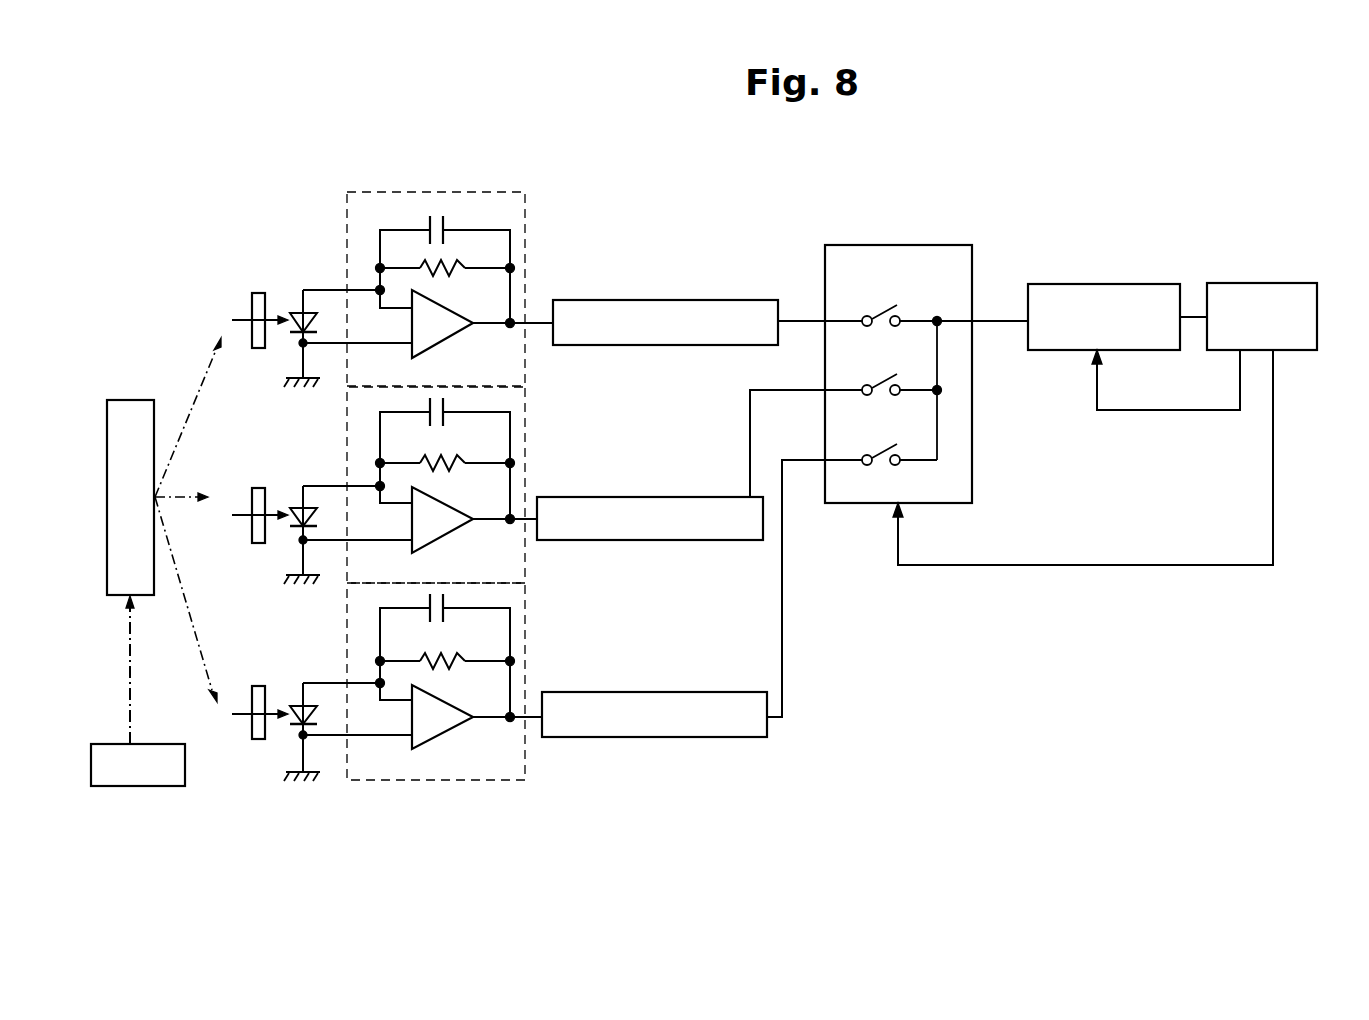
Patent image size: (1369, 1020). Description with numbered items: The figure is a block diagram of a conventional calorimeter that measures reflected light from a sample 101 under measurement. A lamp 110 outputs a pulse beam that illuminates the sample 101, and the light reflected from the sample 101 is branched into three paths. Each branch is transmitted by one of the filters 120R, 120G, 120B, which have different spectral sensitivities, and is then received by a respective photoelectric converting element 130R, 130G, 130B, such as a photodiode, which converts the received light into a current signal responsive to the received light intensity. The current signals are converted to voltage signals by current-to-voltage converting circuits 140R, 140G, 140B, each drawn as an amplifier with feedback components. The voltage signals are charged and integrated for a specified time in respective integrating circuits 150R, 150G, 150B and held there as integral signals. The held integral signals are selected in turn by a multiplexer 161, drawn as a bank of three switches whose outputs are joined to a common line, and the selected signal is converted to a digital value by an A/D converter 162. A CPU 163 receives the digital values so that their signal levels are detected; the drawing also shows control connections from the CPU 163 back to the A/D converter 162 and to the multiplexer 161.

The sample under measurement 101 is at (127, 400).
The lamp 110 is at (150, 744).
The filter 120R is at (255, 293).
The filter 120G is at (255, 488).
The filter 120B is at (255, 740).
The photoelectric converting element 130R is at (303, 311).
The photoelectric converting element 130G is at (301, 506).
The photoelectric converting element 130B is at (300, 704).
The current-to-voltage converting circuit 140R is at (525, 192).
The current-to-voltage converting circuit 140G is at (525, 408).
The current-to-voltage converting circuit 140B is at (525, 770).
The integrating circuit 150R is at (665, 300).
The integrating circuit 150G is at (665, 497).
The integrating circuit 150B is at (665, 692).
The multiplexer 161 is at (930, 245).
The A/D converter 162 is at (1125, 284).
The CPU 163 is at (1290, 283).